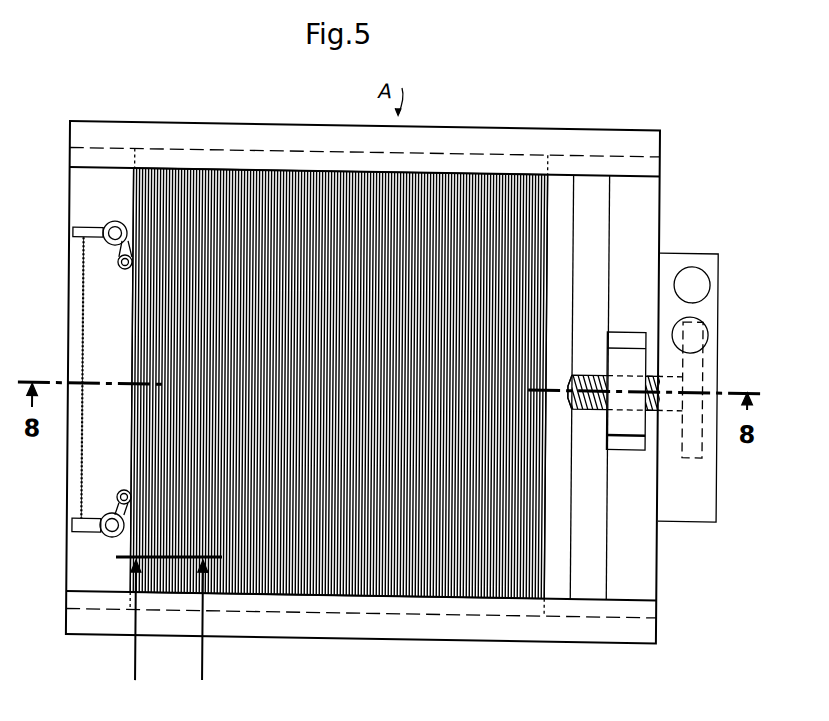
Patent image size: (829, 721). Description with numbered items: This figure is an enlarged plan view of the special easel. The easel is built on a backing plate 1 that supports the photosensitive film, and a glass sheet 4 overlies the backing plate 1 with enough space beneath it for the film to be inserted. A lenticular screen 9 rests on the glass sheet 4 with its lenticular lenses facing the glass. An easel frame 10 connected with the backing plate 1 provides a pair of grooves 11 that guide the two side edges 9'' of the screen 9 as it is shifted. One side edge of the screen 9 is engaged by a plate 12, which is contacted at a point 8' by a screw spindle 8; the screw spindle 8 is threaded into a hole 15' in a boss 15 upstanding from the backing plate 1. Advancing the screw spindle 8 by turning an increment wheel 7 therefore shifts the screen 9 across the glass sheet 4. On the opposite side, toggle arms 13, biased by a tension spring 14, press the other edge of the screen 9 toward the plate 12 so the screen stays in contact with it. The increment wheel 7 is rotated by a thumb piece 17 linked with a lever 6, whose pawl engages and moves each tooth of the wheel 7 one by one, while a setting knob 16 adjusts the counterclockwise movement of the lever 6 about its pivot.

The backing plate 1 is at (76, 582).
The glass sheet 4 is at (608, 219).
The lever 6 is at (168, 633).
The increment wheel 7 is at (710, 437).
The screw spindle 8 is at (623, 363).
The point of screw spindle 8' is at (583, 419).
The lenticular screen 9 is at (339, 428).
The side edges of screen 9'' is at (373, 378).
The easel frame 10 is at (599, 134).
The grooves 11 is at (113, 151).
The plate 12 is at (565, 514).
The toggle arms 13 is at (86, 232).
The tension spring 14 is at (84, 310).
The boss 15 is at (629, 418).
The hole 15' is at (640, 337).
The setting knob 16 is at (699, 320).
The thumb piece 17 is at (704, 273).